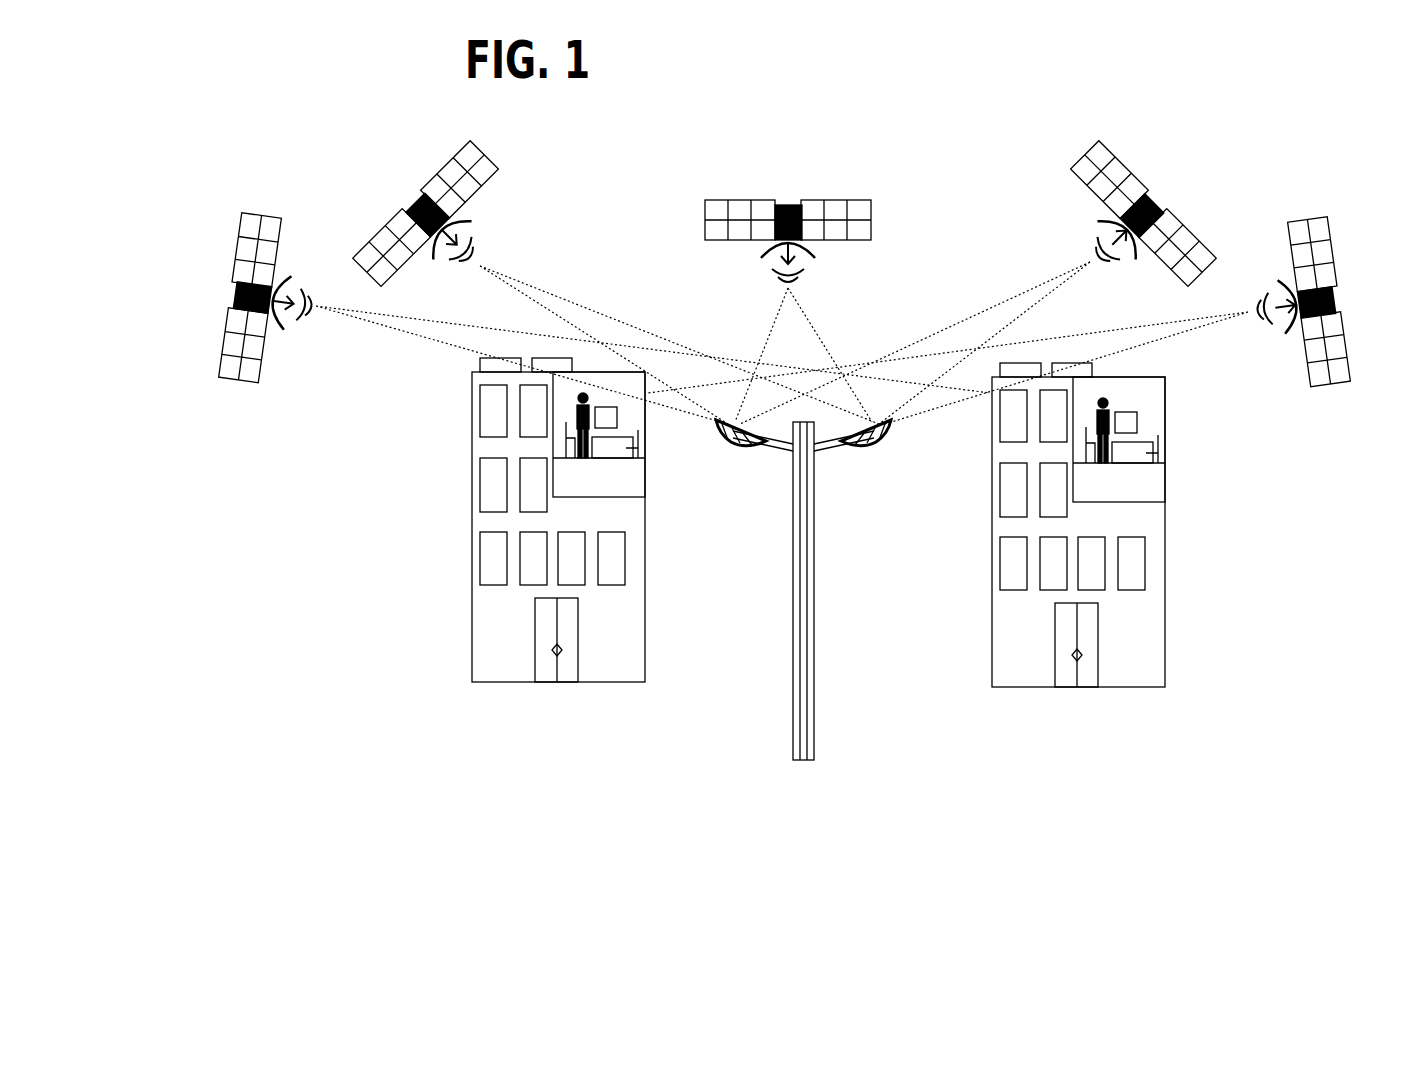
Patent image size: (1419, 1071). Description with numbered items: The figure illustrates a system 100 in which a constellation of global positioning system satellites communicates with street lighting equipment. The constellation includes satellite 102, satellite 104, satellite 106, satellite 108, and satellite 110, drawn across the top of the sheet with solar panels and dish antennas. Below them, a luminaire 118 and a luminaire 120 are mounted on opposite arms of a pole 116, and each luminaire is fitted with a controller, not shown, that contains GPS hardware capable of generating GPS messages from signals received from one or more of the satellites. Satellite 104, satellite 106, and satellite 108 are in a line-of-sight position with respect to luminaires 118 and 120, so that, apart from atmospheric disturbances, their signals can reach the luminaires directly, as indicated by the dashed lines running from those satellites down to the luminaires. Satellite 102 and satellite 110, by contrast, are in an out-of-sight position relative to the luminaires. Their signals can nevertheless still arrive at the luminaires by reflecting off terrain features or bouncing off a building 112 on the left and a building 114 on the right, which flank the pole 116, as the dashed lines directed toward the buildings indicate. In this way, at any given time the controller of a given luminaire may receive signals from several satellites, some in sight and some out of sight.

The system 100 is at (973, 112).
The satellite 102 is at (240, 338).
The satellite 104 is at (404, 218).
The satellite 106 is at (775, 205).
The satellite 108 is at (1156, 205).
The satellite 110 is at (1337, 282).
The building 112 is at (473, 673).
The building 114 is at (1168, 673).
The pole 116 is at (797, 768).
The luminaire 118 is at (727, 443).
The luminaire 120 is at (880, 443).